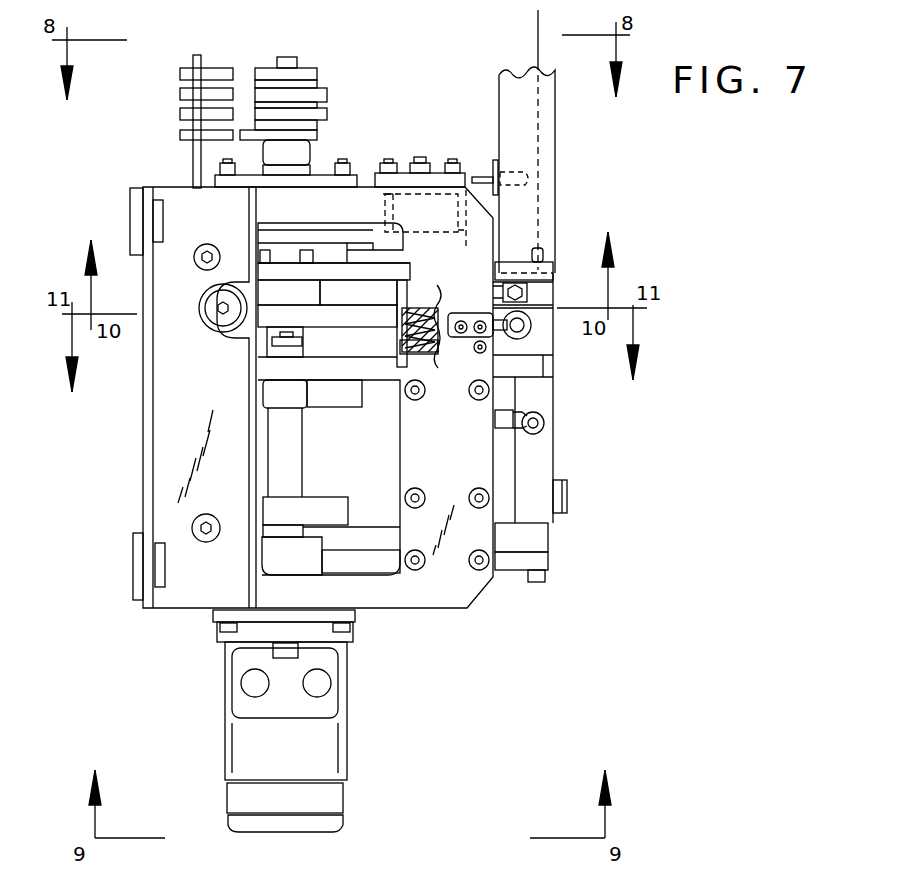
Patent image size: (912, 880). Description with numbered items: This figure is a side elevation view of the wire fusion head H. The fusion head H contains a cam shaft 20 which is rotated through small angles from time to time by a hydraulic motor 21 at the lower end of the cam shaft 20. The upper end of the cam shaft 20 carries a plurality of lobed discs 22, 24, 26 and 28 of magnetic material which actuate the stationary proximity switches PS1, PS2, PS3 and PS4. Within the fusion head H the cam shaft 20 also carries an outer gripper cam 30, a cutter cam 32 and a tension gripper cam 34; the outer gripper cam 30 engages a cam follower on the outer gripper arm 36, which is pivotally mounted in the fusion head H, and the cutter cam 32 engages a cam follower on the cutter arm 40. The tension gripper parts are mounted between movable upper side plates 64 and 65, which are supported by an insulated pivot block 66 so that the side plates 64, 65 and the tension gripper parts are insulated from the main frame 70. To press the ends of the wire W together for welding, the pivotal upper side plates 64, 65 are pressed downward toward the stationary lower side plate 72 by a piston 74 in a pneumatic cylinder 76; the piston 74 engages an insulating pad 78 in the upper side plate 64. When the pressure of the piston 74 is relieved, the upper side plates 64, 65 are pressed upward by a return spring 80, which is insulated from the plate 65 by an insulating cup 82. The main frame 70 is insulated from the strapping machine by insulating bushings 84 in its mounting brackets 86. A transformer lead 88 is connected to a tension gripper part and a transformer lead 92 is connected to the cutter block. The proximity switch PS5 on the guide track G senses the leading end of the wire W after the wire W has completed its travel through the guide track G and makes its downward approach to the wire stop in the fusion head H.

The cam shaft 20 is at (287, 57).
The hydraulic motor 21 is at (347, 743).
The lobed disc 22 is at (317, 68).
The lobed disc 24 is at (330, 95).
The lobed disc 26 is at (330, 113).
The lobed disc 28 is at (318, 128).
The outer gripper cam 30 is at (350, 505).
The cutter cam 32 is at (362, 393).
The tension gripper cam 34 is at (350, 252).
The outer gripper arm 36 is at (377, 530).
The cutter arm 40 is at (268, 368).
The upper side plate 64 is at (280, 272).
The upper side plate 65 is at (328, 318).
The insulated pivot block 66 is at (265, 293).
The main frame 70 is at (430, 610).
The lower side plate 72 is at (405, 348).
The piston 74 is at (462, 212).
The pneumatic cylinder 76 is at (383, 194).
The insulating pad 78 is at (442, 278).
The return spring 80 is at (403, 332).
The insulating cup 82 is at (430, 305).
The insulating bushing 84 is at (157, 582).
The mounting bracket 86 is at (175, 612).
The transformer lead 88 is at (540, 290).
The transformer lead 92 is at (520, 432).
The proximity switch PS1 is at (180, 135).
The proximity switch PS2 is at (180, 72).
The proximity switch PS3 is at (180, 94).
The proximity switch PS4 is at (180, 114).
The proximity switch PS5 is at (490, 178).
The guide track G is at (557, 136).
The fusion head H is at (555, 455).
The wire W is at (538, 30).